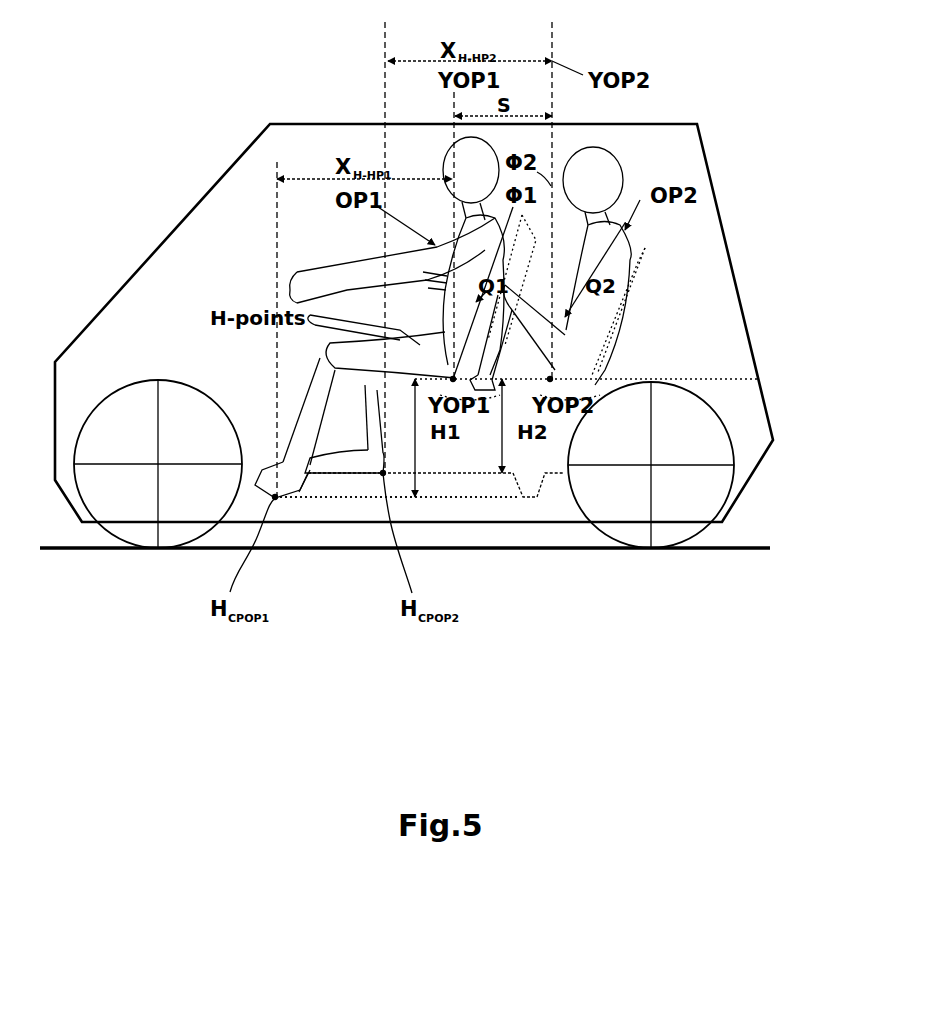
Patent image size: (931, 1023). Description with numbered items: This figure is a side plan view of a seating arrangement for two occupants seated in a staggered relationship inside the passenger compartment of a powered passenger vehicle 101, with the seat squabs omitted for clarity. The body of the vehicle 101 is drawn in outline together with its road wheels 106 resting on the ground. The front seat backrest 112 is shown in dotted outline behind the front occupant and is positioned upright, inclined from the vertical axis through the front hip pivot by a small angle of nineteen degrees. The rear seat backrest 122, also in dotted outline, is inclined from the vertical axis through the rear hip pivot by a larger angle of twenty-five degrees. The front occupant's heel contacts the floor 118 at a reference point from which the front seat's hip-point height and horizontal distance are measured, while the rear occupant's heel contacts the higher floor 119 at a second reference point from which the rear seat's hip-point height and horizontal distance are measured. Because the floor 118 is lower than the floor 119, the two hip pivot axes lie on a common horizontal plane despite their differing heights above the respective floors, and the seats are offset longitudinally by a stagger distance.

The powered passenger vehicle 101 is at (302, 122).
The road wheels 106 is at (128, 540).
The backrest 112 is at (530, 250).
The floor 118 is at (352, 497).
The floor 119 is at (513, 475).
The backrest 122 is at (643, 247).